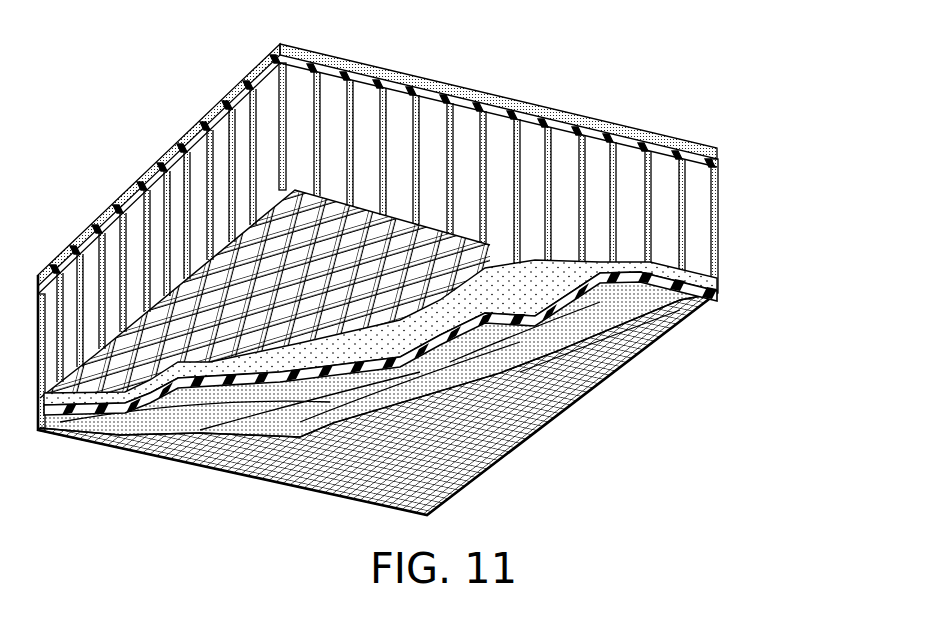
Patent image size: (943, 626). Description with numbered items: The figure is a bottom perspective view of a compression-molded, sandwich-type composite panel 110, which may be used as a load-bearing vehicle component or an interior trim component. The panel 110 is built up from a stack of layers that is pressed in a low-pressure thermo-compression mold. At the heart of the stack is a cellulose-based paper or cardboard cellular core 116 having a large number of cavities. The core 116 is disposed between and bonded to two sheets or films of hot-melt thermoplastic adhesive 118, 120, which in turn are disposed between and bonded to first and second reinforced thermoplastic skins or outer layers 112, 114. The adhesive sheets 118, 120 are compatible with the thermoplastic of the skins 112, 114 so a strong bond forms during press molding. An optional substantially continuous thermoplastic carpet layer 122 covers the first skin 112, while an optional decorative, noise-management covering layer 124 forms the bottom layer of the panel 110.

The composite panel 110 is at (549, 53).
The first reinforced thermoplastic skin 112 is at (718, 162).
The second reinforced thermoplastic skin 114 is at (718, 295).
The cellular core 116 is at (718, 225).
The hot-melt adhesive sheet 118 is at (696, 170).
The hot-melt adhesive sheet 120 is at (718, 272).
The carpet layer 122 is at (718, 152).
The covering layer 124 is at (690, 327).